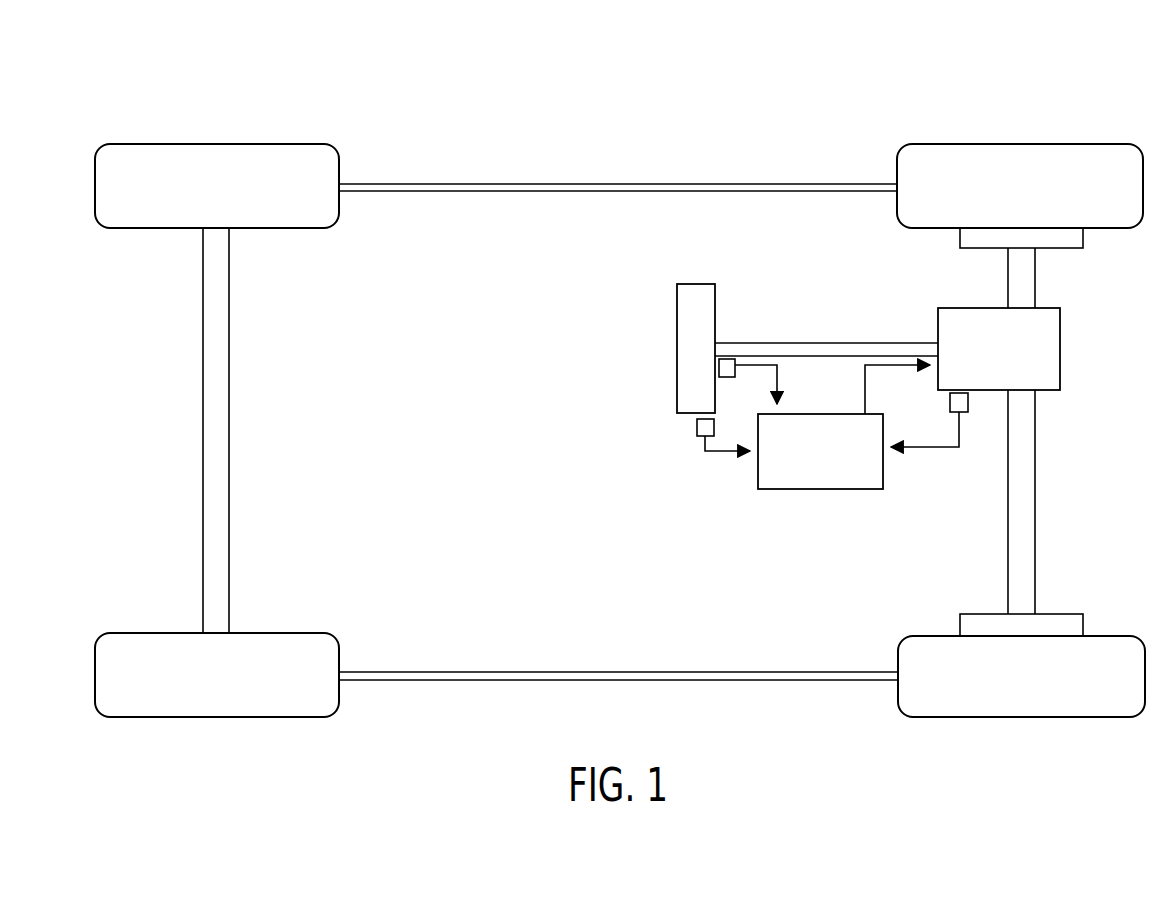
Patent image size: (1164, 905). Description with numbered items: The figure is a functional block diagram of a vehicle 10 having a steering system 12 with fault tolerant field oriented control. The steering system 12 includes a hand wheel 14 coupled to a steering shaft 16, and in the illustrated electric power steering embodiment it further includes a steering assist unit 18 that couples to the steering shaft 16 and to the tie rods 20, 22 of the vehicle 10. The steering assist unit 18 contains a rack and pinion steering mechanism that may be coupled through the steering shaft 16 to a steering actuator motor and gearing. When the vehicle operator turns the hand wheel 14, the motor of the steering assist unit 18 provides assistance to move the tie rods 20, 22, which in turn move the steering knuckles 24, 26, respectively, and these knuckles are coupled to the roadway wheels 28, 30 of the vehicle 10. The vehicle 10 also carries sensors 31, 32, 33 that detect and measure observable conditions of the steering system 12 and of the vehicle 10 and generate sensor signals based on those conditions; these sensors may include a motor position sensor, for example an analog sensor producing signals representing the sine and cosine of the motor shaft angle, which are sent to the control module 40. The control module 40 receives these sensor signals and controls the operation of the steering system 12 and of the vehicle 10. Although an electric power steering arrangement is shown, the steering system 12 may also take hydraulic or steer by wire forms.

The vehicle 10 is at (958, 115).
The steering system 12 is at (788, 302).
The hand wheel 14 is at (697, 292).
The steering shaft 16 is at (847, 350).
The steering assist unit 18 is at (1052, 350).
The tie rod 20 is at (1030, 290).
The tie rod 22 is at (1027, 497).
The steering knuckle 24 is at (965, 237).
The steering knuckle 26 is at (1052, 622).
The roadway wheel 28 is at (1088, 150).
The roadway wheel 30 is at (1108, 645).
The sensor 31 is at (727, 360).
The sensor 32 is at (948, 398).
The sensor 33 is at (700, 428).
The control module 40 is at (803, 412).